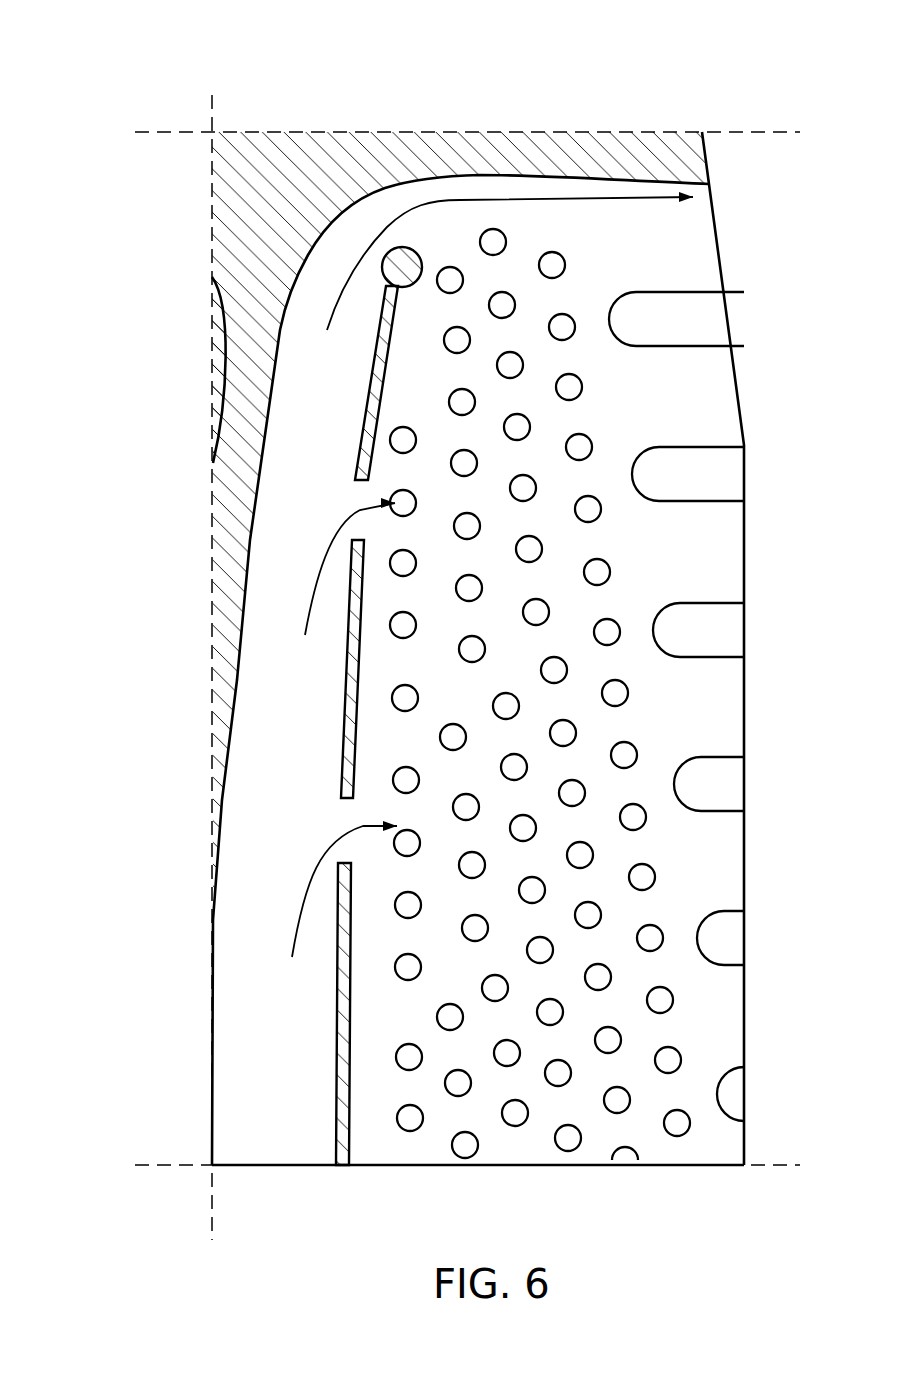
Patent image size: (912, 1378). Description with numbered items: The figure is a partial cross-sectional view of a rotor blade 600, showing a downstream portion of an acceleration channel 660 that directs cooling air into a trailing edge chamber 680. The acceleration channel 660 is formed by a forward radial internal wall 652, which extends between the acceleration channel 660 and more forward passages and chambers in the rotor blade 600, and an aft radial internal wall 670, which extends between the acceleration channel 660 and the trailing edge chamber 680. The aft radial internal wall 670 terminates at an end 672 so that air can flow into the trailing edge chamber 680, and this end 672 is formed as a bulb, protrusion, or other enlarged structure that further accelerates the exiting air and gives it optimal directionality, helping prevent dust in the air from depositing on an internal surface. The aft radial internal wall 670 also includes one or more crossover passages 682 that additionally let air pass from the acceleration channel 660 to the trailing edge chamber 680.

The rotor blade 600 is at (429, 629).
The forward radial internal wall 652 is at (255, 308).
The acceleration channel 660 is at (275, 753).
The aft radial internal wall 670 is at (360, 397).
The end 672 is at (408, 260).
The trailing edge chamber 680 is at (437, 1137).
The crossover passages 682 is at (357, 493).